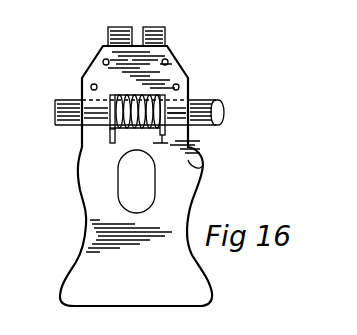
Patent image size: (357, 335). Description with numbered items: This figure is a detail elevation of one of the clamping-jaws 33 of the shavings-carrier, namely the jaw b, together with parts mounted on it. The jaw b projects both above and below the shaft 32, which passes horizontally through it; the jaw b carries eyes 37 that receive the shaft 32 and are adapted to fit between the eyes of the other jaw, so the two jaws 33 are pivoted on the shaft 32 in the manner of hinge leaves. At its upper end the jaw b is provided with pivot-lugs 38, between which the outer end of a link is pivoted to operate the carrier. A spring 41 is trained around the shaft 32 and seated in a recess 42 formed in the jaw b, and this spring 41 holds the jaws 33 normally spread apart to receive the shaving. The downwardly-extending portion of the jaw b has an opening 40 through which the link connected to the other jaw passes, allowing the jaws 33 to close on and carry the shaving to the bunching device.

The shaft 32 is at (55, 106).
The clamping-jaws 33 is at (92, 218).
The eyes 37 is at (177, 112).
The pivot-lugs 38 is at (163, 29).
The opening 40 is at (136, 181).
The spring 41 is at (112, 137).
The recess 42 is at (152, 96).
The jaw b is at (190, 175).